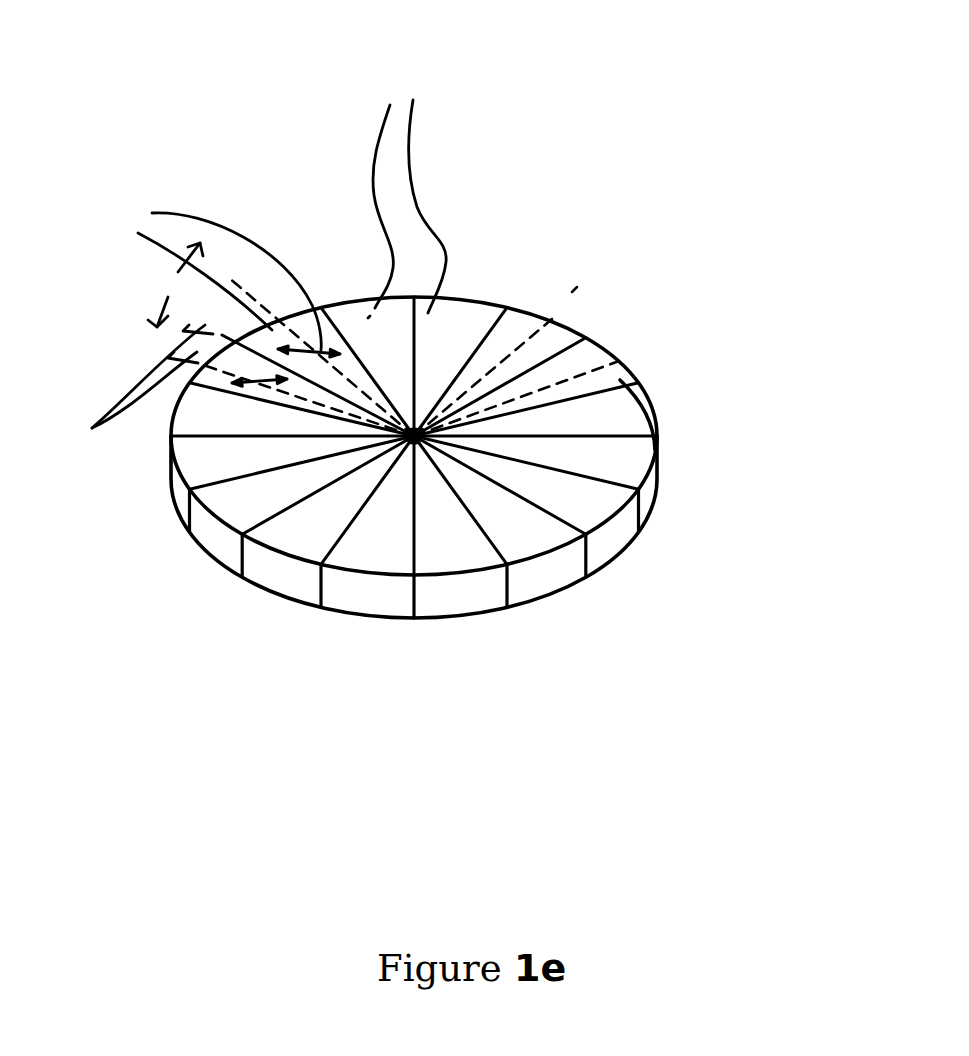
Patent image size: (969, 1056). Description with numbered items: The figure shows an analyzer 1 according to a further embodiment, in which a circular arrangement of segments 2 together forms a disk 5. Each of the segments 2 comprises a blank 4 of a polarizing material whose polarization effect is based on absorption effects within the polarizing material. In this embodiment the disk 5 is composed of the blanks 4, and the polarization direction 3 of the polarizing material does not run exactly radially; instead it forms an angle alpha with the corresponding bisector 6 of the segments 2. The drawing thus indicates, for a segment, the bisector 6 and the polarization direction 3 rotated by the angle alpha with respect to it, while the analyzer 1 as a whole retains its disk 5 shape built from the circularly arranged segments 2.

The analyzer 1 is at (605, 258).
The segments 2 is at (407, 165).
The polarization direction 3 is at (239, 309).
The blank 4 is at (220, 547).
The disk 5 is at (656, 403).
The bisector 6 is at (125, 401).